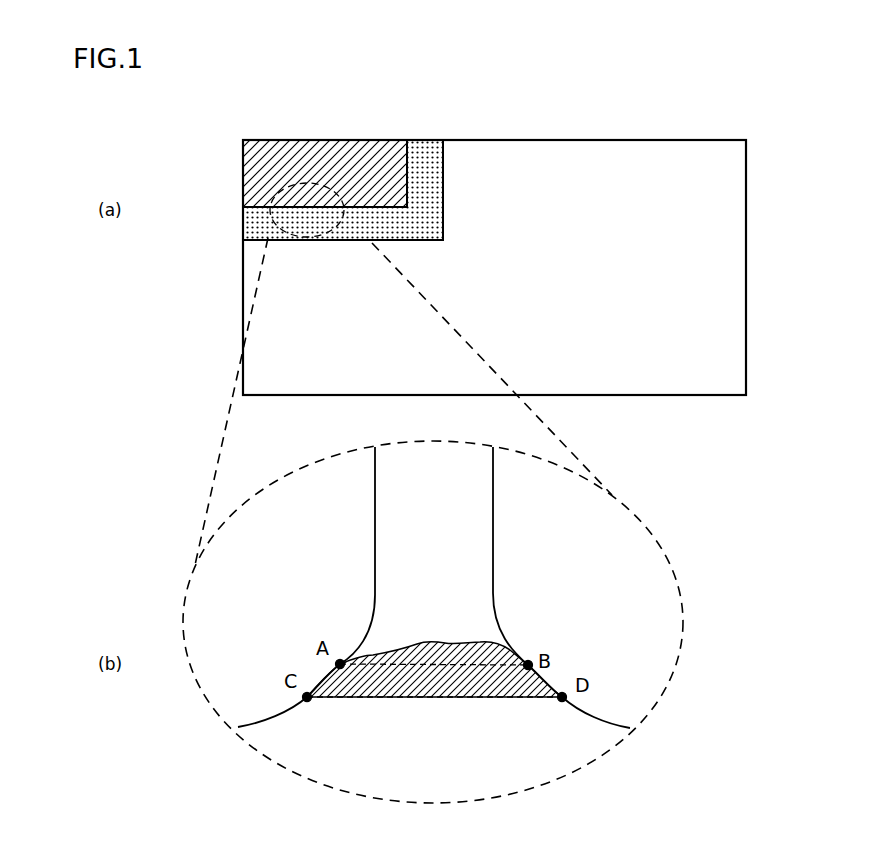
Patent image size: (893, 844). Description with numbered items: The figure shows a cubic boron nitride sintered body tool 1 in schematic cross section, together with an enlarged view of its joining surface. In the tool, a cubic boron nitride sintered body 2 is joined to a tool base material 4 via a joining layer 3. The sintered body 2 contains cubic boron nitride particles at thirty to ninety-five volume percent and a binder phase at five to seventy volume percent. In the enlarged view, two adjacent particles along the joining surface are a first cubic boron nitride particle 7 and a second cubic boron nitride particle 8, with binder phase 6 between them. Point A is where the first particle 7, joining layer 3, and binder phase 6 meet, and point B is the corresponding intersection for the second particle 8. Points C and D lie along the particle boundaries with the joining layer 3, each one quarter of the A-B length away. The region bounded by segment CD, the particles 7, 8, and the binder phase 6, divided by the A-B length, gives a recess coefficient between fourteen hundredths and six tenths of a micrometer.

The cubic boron nitride sintered body tool 1 is at (661, 132).
The cubic boron nitride sintered body 2 is at (243, 166).
The joining layer 3 is at (443, 140).
The tool base material 4 is at (687, 378).
The binder phase 6 is at (434, 587).
The first cubic boron nitride particle 7 is at (306, 547).
The second cubic boron nitride particle 8 is at (569, 547).